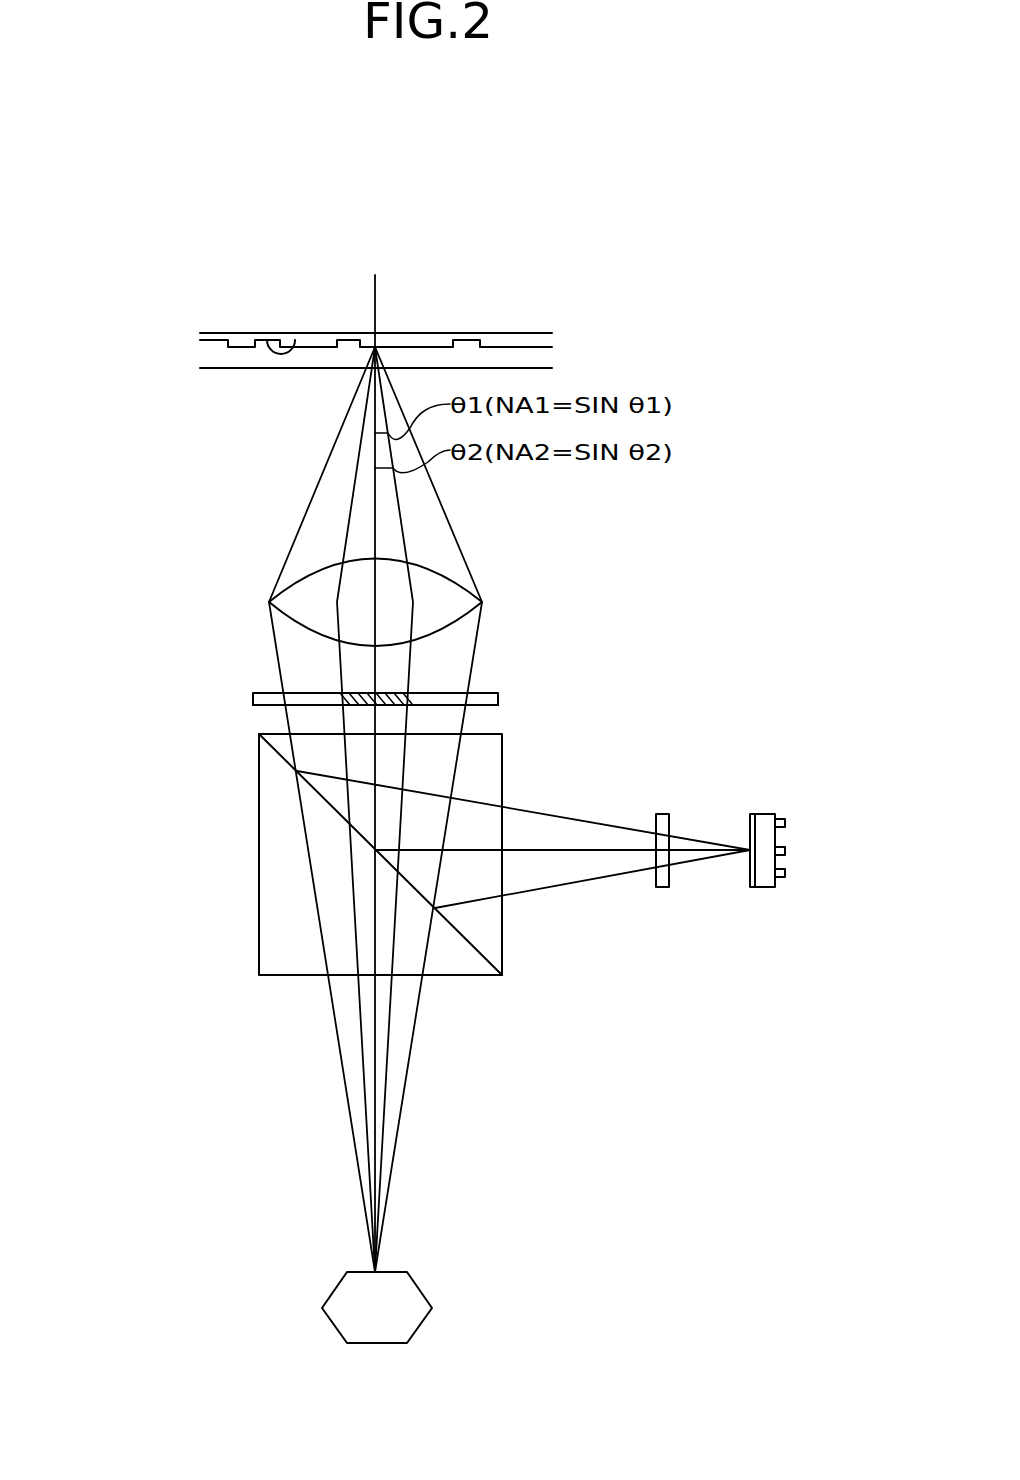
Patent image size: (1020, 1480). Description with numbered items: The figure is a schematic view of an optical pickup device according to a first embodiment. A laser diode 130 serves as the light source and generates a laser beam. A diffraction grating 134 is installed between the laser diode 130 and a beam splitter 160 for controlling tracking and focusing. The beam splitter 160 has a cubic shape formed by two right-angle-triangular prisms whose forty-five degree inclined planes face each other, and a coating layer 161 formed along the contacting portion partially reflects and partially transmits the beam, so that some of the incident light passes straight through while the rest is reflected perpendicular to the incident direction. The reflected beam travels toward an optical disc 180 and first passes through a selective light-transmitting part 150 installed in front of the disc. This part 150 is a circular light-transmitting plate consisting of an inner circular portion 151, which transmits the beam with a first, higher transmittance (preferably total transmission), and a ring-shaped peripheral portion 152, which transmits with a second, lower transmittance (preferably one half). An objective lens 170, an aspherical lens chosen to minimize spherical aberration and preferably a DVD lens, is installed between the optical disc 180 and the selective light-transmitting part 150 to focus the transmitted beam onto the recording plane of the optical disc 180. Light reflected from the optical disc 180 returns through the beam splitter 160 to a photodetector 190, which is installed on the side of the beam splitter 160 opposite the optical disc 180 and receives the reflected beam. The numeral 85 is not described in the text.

The pit 85 is at (297, 340).
The optical disc 180 is at (217, 352).
The objective lens 170 is at (303, 600).
The selective light-transmitting part 150 is at (484, 683).
The inner circular portion 151 is at (365, 690).
The peripheral portion 152 is at (268, 702).
The beam splitter 160 is at (483, 953).
The coating layer 161 is at (448, 925).
The diffraction grating 134 is at (664, 814).
The laser diode 130 is at (763, 820).
The photodetector 190 is at (365, 1286).